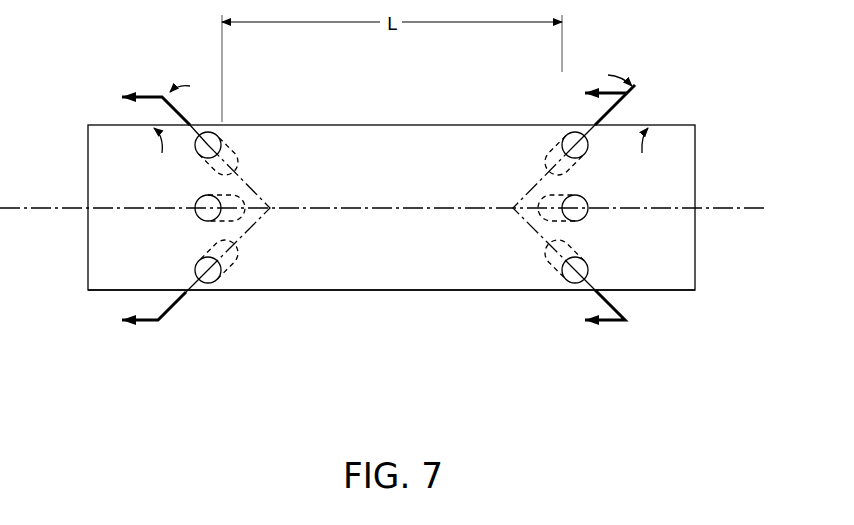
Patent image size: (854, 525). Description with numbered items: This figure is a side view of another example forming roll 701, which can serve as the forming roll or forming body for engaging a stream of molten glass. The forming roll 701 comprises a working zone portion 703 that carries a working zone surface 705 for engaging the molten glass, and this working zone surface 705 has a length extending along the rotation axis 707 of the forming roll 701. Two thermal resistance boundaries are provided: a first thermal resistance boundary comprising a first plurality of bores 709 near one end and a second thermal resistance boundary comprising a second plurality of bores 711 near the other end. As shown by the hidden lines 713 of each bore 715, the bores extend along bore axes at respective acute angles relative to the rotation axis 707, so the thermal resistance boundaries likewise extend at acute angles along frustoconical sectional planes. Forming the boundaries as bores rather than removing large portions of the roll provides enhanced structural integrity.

The forming roll 701 is at (72, 323).
The working zone portion 703 is at (313, 307).
The working zone surface 705 is at (453, 307).
The rotation axis 707 is at (743, 207).
The first plurality of bores 709 is at (215, 297).
The second plurality of bores 711 is at (558, 295).
The hidden lines 713 is at (233, 153).
The bore 715 is at (214, 132).